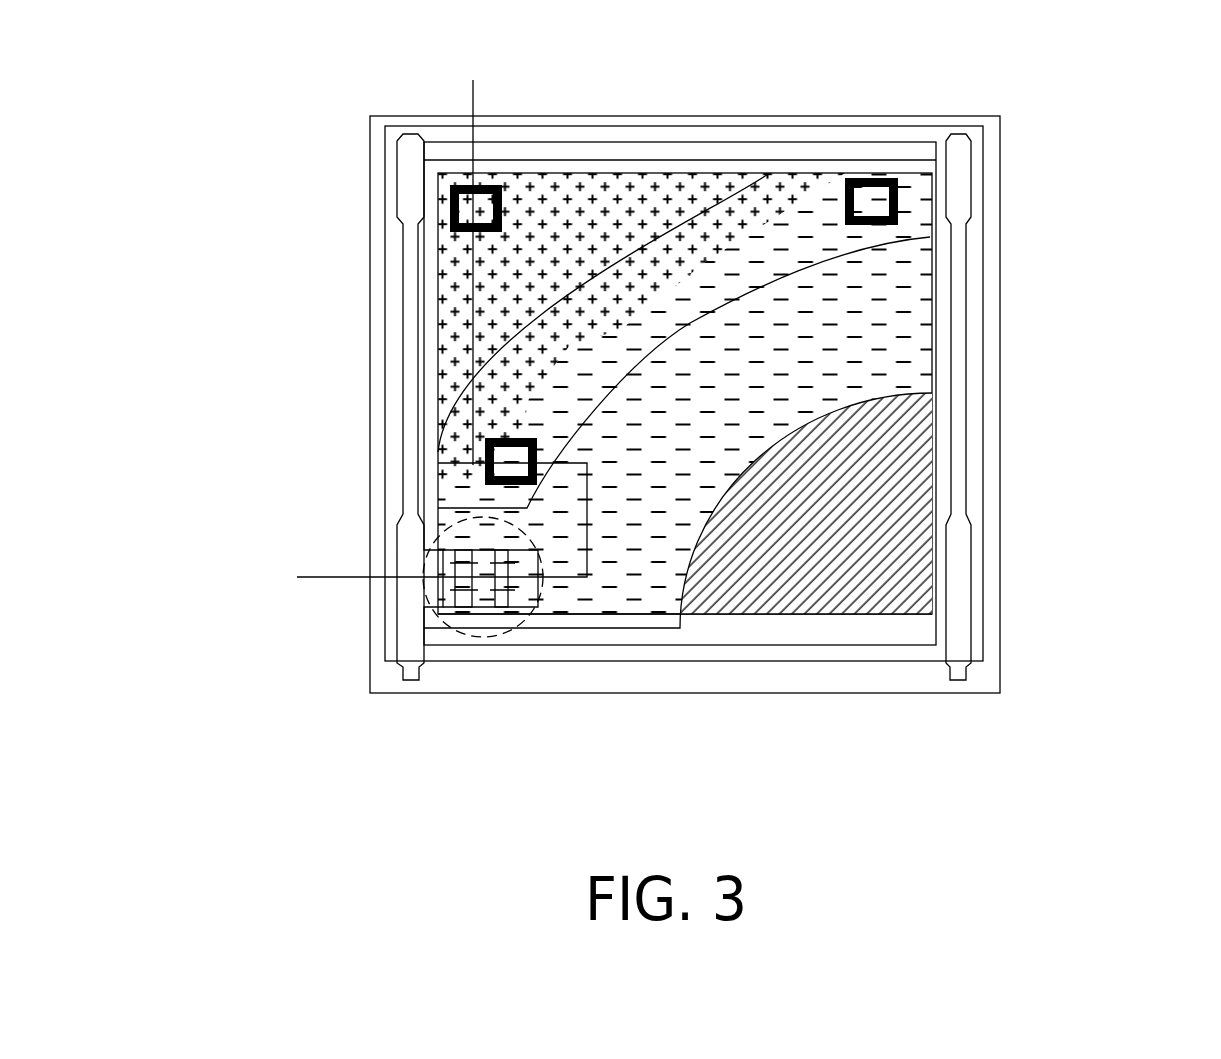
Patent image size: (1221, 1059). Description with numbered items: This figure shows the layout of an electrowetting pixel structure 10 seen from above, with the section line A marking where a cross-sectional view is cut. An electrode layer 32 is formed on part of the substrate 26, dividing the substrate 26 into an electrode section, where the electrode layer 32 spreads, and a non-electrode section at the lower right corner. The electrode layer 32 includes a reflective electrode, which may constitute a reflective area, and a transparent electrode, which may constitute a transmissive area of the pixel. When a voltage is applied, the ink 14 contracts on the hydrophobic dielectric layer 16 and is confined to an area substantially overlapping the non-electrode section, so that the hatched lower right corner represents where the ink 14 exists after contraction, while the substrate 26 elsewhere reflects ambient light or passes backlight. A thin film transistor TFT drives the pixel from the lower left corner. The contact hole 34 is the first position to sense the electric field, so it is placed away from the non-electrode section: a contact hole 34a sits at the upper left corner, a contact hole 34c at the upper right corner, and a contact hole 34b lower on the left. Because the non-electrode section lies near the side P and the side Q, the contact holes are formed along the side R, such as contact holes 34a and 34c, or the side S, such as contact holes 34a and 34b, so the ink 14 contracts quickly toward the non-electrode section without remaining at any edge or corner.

The electrowetting pixel structure 10 is at (167, 47).
The ink 14 is at (887, 542).
The hydrophobic dielectric layer 16 is at (417, 295).
The substrate 26 is at (368, 407).
The electrode layer 32 is at (563, 223).
The contact hole 34 is at (631, 270).
The contact hole 34a is at (450, 210).
The contact hole 34b is at (485, 467).
The contact hole 34c is at (890, 178).
The thin film transistor TFT is at (460, 635).
The side P is at (732, 614).
The side Q is at (933, 353).
The side R is at (768, 174).
The side S is at (438, 375).
The line A-A' A is at (399, 318).